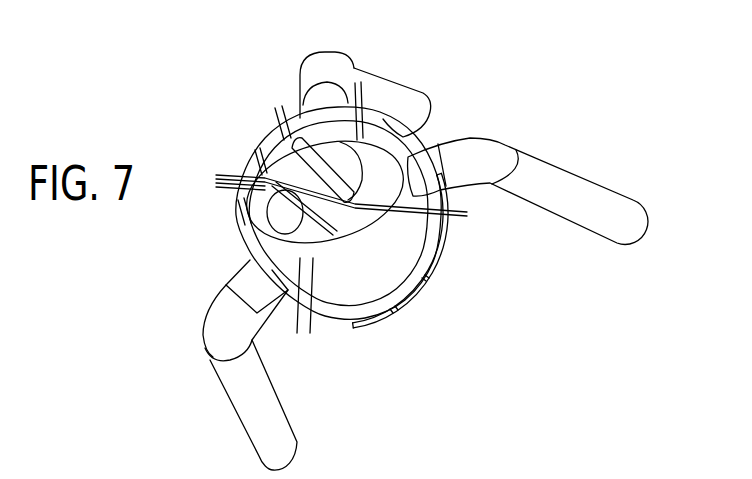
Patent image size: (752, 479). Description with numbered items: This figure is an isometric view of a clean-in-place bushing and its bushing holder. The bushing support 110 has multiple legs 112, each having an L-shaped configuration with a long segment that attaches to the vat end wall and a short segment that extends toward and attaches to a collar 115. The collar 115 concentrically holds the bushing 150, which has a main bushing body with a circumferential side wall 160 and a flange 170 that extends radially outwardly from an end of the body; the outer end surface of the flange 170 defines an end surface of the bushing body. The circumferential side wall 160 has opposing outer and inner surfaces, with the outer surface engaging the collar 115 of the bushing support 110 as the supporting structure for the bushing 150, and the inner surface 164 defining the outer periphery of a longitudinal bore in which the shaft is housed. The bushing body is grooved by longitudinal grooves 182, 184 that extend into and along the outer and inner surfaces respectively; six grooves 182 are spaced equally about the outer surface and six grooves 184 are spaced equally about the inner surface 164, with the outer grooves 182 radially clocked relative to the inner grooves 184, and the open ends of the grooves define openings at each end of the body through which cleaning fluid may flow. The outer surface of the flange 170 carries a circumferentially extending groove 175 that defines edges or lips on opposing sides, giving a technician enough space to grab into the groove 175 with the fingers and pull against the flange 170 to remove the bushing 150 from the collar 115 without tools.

The bushing support 110 is at (243, 245).
The legs 112 is at (387, 90).
The collar 115 is at (378, 293).
The bushing 150 is at (278, 130).
The circumferential side wall 160 is at (357, 135).
The inner surface 164 is at (263, 133).
The flange 170 is at (457, 245).
The groove 175 is at (397, 298).
The longitudinal grooves 182 is at (278, 127).
The longitudinal grooves 184 is at (341, 201).